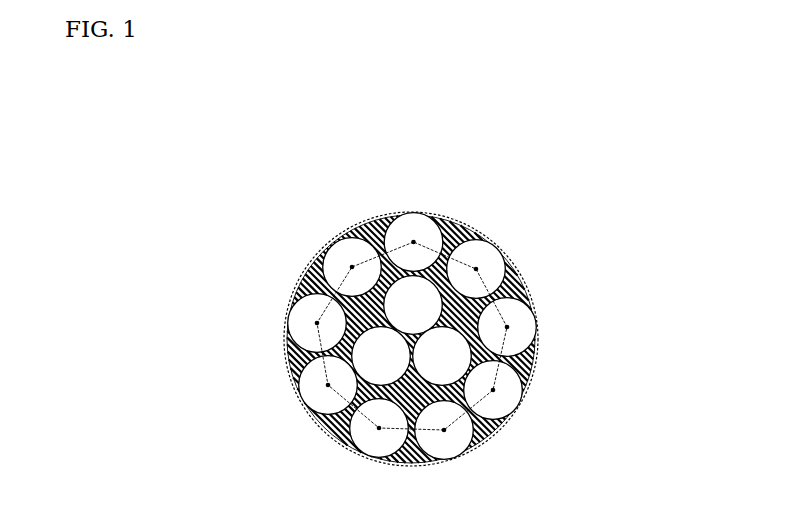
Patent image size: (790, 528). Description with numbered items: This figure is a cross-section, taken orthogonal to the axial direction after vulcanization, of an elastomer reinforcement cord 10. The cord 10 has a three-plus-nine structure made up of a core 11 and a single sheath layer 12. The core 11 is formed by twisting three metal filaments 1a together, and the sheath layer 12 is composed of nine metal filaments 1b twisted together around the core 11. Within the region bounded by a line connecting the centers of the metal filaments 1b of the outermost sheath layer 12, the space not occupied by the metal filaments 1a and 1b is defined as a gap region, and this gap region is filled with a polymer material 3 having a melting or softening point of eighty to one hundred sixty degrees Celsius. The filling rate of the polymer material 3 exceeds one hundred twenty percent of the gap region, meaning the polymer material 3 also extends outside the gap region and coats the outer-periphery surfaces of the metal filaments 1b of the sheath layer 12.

The elastomer reinforcement cord 10 is at (406, 290).
The polymer material 3 is at (523, 282).
The sheath layer 12 is at (288, 347).
The core 11 is at (387, 286).
The metal filaments 1a is at (458, 227).
The metal filaments 1b is at (422, 228).